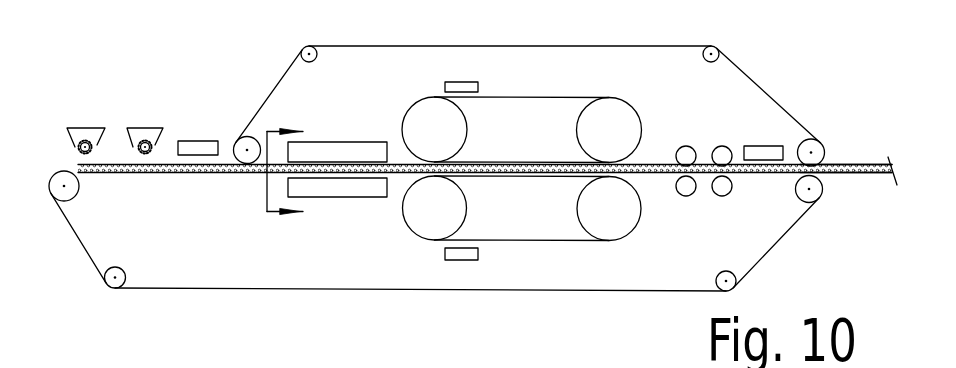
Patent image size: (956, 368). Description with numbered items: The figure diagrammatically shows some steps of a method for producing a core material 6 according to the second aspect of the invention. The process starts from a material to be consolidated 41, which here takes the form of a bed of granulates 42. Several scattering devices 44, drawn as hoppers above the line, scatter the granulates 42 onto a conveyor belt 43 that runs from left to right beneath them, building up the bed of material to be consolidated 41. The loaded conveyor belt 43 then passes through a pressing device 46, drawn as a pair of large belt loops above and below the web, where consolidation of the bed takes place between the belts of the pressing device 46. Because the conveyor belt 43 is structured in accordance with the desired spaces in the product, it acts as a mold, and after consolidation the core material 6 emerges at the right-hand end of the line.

The core material 6 is at (843, 175).
The material to be consolidated 41 is at (165, 173).
The granulates 42 is at (123, 173).
The conveyor belt 43 is at (233, 173).
The scattering devices 44 is at (150, 96).
The pressing device 46 is at (548, 56).